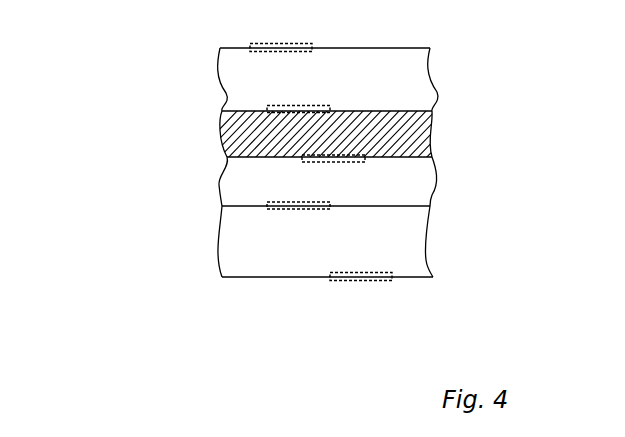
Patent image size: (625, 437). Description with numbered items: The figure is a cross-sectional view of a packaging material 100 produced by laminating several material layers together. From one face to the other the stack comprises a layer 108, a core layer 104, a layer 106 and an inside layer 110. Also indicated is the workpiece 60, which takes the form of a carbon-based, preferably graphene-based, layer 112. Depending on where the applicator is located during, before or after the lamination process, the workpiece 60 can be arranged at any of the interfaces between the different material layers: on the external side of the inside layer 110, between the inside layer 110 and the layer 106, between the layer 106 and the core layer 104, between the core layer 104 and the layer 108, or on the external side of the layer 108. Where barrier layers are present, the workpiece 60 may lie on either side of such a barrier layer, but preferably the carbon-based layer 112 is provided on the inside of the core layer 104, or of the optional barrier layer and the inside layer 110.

The packaging material 100 is at (192, 145).
The workpiece 60 is at (283, 44).
The carbon-based layer 112 is at (315, 168).
The layer 108 is at (436, 64).
The core layer 104 is at (441, 120).
The layer 106 is at (434, 188).
The inside layer 110 is at (436, 234).